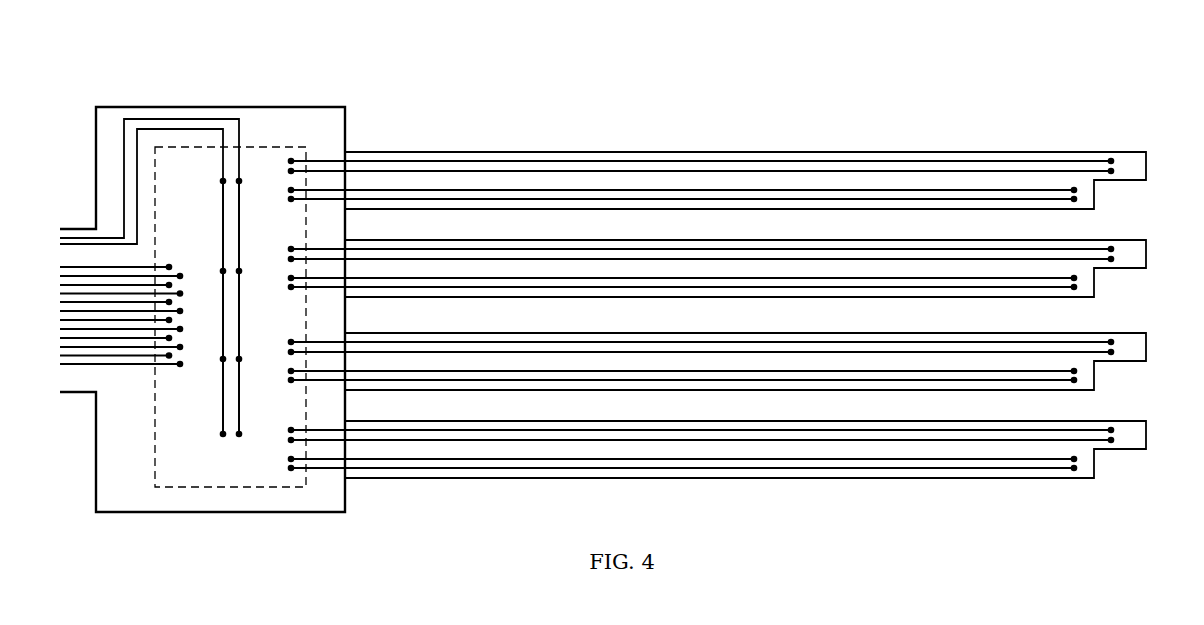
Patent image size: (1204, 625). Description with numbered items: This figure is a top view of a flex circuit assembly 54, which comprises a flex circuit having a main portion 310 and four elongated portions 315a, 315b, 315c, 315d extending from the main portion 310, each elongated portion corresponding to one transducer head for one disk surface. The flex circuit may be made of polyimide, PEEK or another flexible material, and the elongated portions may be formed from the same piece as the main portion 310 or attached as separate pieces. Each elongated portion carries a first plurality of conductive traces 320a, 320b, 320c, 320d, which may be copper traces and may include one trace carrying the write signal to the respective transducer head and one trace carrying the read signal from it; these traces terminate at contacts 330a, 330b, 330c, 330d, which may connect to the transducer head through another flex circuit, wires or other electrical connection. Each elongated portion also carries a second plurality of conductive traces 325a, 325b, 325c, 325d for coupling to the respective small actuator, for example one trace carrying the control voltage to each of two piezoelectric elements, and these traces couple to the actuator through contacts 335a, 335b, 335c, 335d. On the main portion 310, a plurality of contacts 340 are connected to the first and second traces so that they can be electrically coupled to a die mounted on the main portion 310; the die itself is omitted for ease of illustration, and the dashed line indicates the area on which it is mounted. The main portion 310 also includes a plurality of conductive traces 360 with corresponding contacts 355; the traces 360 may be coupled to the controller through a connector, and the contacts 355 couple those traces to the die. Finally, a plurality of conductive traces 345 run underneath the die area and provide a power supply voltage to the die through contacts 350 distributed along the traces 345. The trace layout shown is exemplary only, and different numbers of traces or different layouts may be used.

The flex circuit assembly 54 is at (727, 95).
The main portion 310 is at (345, 106).
The elongated portion 315a is at (411, 152).
The elongated portion 315b is at (562, 240).
The elongated portion 315c is at (710, 333).
The elongated portion 315d is at (873, 422).
The first plurality of conductive traces 320a is at (457, 159).
The first plurality of conductive traces 320b is at (606, 247).
The first plurality of conductive traces 320c is at (753, 341).
The first plurality of conductive traces 320d is at (913, 429).
The second plurality of conductive traces 325a is at (464, 201).
The second plurality of conductive traces 325b is at (613, 290).
The second plurality of conductive traces 325c is at (760, 385).
The second plurality of conductive traces 325d is at (924, 472).
The contacts 330a is at (1121, 160).
The contacts 330b is at (1121, 248).
The contacts 330c is at (1121, 342).
The contacts 330d is at (1120, 432).
The contacts 335a is at (1083, 195).
The contacts 335b is at (1083, 284).
The contacts 335c is at (1083, 376).
The contacts 335d is at (1083, 469).
The contacts 340 is at (291, 146).
The conductive traces 345 is at (158, 116).
The contacts 350 is at (217, 442).
The contacts 355 is at (168, 378).
The conductive traces 360 is at (103, 371).